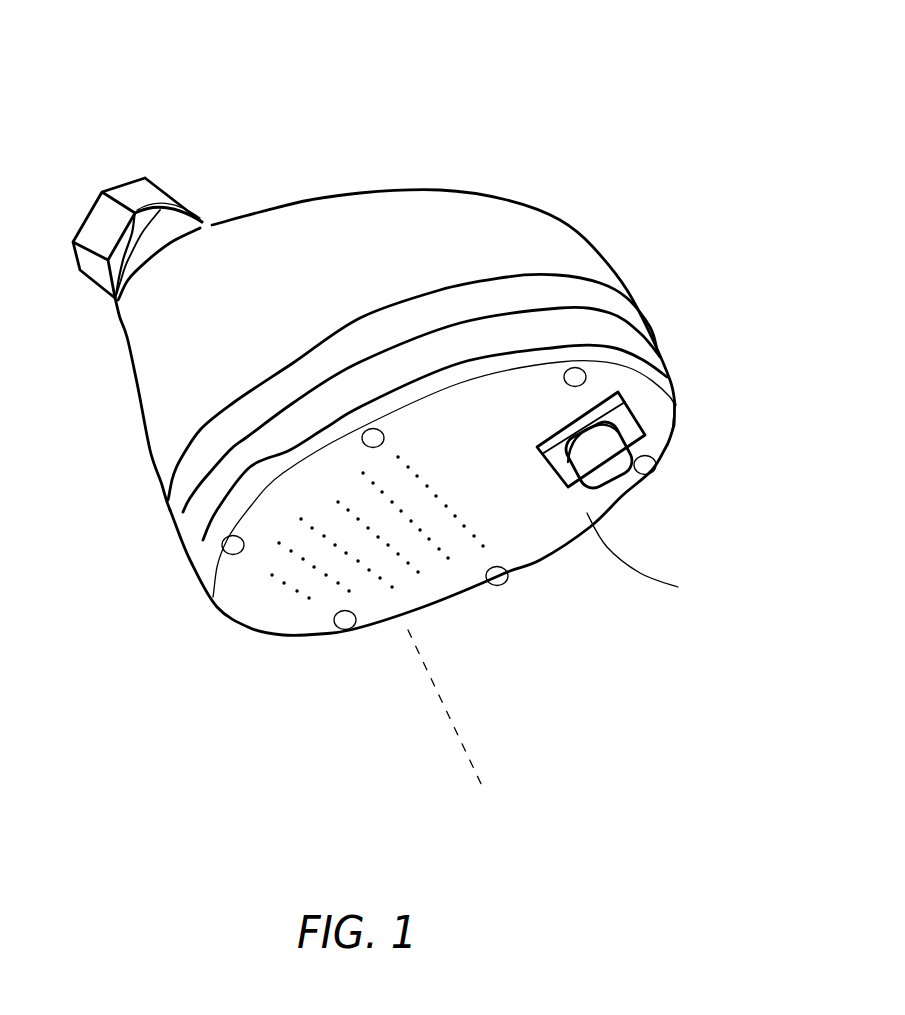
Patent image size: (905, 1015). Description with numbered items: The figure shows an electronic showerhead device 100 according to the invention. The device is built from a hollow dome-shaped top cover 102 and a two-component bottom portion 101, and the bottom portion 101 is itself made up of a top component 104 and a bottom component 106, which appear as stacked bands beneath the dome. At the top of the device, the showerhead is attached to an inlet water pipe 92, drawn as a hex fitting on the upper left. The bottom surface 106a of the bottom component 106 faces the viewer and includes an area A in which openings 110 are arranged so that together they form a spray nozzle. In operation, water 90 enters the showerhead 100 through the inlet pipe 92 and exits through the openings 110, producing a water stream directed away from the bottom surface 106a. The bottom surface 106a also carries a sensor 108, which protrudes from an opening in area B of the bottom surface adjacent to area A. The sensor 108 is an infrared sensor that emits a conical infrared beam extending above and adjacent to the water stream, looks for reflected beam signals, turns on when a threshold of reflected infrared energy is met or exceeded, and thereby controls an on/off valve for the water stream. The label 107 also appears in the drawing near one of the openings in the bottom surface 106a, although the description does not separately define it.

The water 90 is at (402, 605).
The inlet water pipe 92 is at (187, 207).
The electronic showerhead device 100 is at (433, 406).
The bottom portion 101 is at (200, 523).
The top cover 102 is at (512, 220).
The top component 104 is at (605, 302).
The bottom component 106 is at (652, 373).
The bottom surface 106a is at (527, 527).
The fastener hole 107 is at (223, 545).
The sensor 108 is at (607, 463).
The openings 110 is at (290, 555).